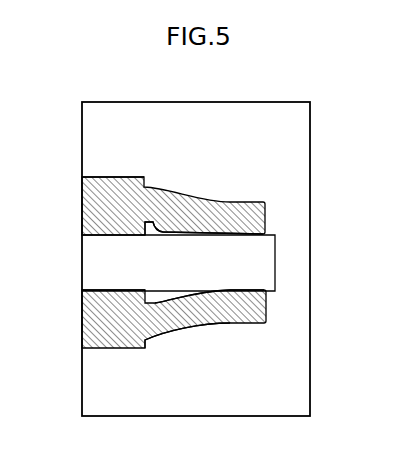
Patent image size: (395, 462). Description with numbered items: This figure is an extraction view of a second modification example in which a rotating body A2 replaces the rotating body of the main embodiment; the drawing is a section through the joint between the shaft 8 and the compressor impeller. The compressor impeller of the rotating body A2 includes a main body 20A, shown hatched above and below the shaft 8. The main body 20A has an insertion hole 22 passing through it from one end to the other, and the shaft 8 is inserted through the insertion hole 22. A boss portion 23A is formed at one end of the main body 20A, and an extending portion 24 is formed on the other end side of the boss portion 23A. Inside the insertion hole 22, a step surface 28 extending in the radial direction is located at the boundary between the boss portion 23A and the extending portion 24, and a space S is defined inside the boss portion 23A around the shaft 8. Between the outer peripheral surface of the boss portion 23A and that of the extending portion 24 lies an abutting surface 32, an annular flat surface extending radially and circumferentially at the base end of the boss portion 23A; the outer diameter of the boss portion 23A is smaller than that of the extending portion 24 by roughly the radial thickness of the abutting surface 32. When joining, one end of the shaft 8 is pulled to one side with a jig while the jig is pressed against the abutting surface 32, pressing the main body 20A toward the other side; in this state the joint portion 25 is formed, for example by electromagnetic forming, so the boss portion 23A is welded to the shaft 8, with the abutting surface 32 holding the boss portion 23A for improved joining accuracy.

The rotating body A2 is at (125, 152).
The shaft 8 is at (100, 260).
The main body 20A is at (120, 349).
The insertion hole 22 is at (100, 290).
The boss portion 23A is at (230, 202).
The extending portion 24 is at (102, 177).
The joint portion 25 is at (238, 290).
The step surface 28 is at (153, 222).
The abutting surface 32 is at (150, 342).
The space S is at (215, 231).